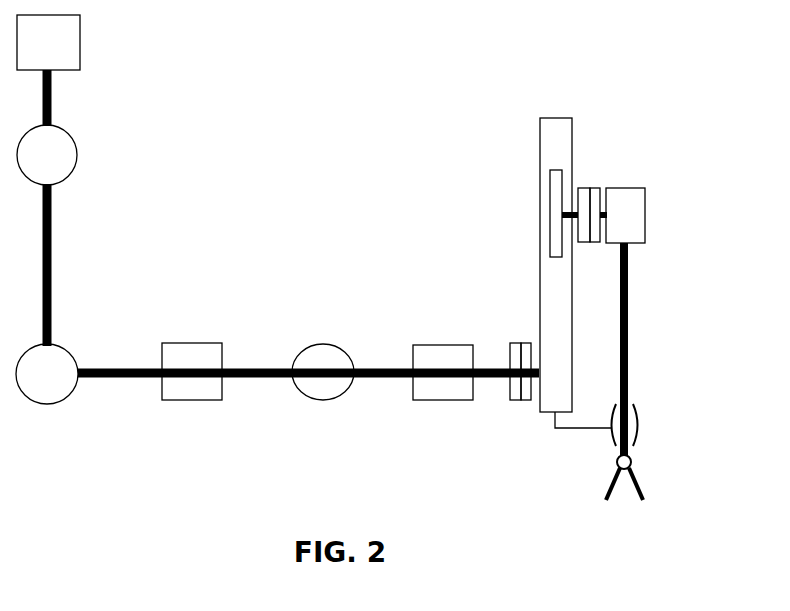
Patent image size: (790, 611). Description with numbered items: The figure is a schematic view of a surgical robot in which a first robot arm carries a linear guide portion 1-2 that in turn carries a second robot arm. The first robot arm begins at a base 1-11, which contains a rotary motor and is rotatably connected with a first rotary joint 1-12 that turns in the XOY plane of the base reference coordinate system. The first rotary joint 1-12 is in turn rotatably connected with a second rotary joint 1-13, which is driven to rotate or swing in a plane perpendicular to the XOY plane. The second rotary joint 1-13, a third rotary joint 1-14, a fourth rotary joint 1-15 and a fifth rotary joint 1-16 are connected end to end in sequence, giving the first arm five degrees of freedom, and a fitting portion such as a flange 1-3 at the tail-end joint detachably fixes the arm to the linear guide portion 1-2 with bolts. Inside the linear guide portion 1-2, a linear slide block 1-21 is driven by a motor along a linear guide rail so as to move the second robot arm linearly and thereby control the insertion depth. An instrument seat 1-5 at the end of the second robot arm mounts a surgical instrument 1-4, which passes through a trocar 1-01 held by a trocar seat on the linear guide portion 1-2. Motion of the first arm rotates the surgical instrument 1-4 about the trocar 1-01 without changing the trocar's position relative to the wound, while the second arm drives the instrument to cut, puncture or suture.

The base 1-11 is at (48, 42).
The first rotary joint 1-12 is at (47, 155).
The second rotary joint 1-13 is at (47, 374).
The third rotary joint 1-14 is at (192, 371).
The fourth rotary joint 1-15 is at (323, 372).
The fifth rotary joint 1-16 is at (443, 372).
The flange 1-3 is at (517, 344).
The linear guide portion 1-2 is at (520, 150).
The linear slide block 1-21 is at (547, 218).
The instrument seat 1-5 is at (578, 190).
The trocar 1-01 is at (648, 426).
The surgical instrument 1-4 is at (655, 486).